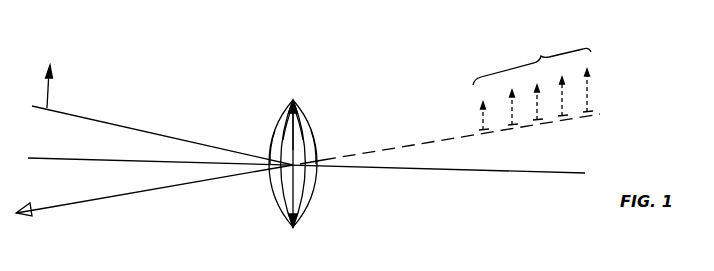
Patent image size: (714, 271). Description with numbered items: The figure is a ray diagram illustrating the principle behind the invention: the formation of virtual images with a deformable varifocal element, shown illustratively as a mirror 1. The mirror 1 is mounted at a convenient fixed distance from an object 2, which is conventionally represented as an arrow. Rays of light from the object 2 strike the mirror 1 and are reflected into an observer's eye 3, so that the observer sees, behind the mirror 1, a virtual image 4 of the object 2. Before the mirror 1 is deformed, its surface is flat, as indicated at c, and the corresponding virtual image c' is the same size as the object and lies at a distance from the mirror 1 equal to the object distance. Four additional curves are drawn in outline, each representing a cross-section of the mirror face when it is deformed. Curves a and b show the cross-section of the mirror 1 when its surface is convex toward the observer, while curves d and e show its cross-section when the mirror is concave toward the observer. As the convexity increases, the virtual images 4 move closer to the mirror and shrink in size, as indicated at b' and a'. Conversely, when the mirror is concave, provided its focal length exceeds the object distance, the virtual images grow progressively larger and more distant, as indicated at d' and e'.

The mirror 1 is at (293, 179).
The object 2 is at (50, 94).
The observer's eye 3 is at (25, 216).
The virtual image 4 is at (541, 57).
The mirror cross-section curve a is at (279, 111).
The mirror cross-section curve b is at (272, 120).
The flat mirror surface c is at (269, 147).
The mirror cross-section curve d is at (312, 120).
The mirror cross-section curve e is at (323, 146).
The virtual image a' is at (482, 109).
The virtual image b' is at (511, 100).
The virtual image c' is at (535, 95).
The virtual image d' is at (560, 90).
The virtual image e' is at (586, 83).